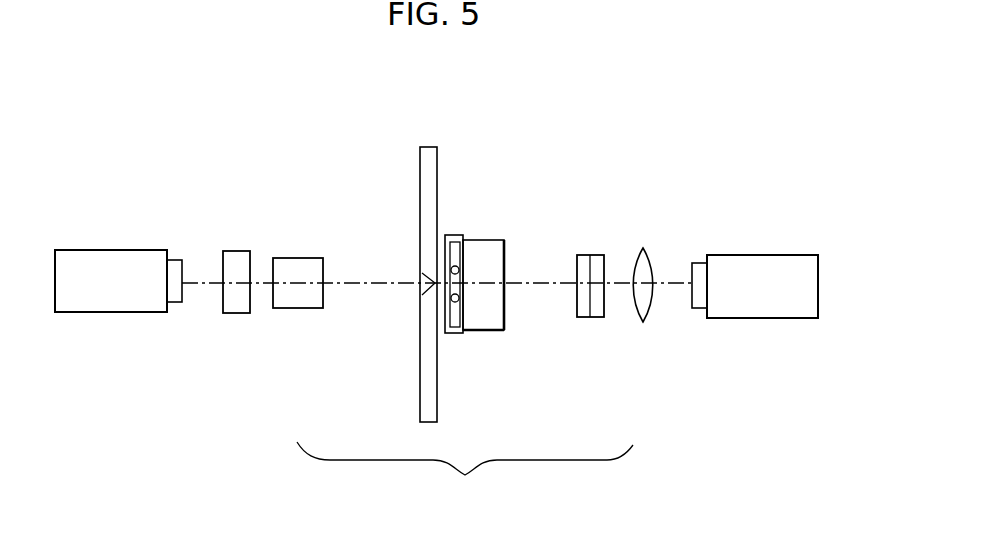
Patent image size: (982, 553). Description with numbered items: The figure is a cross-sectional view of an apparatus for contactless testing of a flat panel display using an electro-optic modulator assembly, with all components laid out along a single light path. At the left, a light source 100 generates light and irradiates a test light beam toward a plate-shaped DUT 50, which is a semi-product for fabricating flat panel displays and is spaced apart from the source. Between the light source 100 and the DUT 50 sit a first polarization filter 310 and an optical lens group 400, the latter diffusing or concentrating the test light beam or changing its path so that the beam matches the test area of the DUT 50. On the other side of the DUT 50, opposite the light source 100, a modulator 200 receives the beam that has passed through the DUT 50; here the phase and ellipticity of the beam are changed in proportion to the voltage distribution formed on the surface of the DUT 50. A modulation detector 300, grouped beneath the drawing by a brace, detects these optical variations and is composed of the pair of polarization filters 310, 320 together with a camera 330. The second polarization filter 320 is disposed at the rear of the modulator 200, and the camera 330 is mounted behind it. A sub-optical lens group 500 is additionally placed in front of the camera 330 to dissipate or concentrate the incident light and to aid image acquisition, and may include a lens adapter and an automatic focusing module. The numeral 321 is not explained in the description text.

The DUT 50 is at (432, 147).
The light source 100 is at (107, 260).
The modulator 200 is at (483, 240).
The modulation detector 300 is at (465, 474).
The first polarization filter 310 is at (238, 313).
The second polarization filter 320 is at (595, 318).
The plate boundary 321 is at (587, 255).
The camera 330 is at (728, 318).
The optical lens group 400 is at (305, 263).
The sub-optical lens group 500 is at (645, 255).